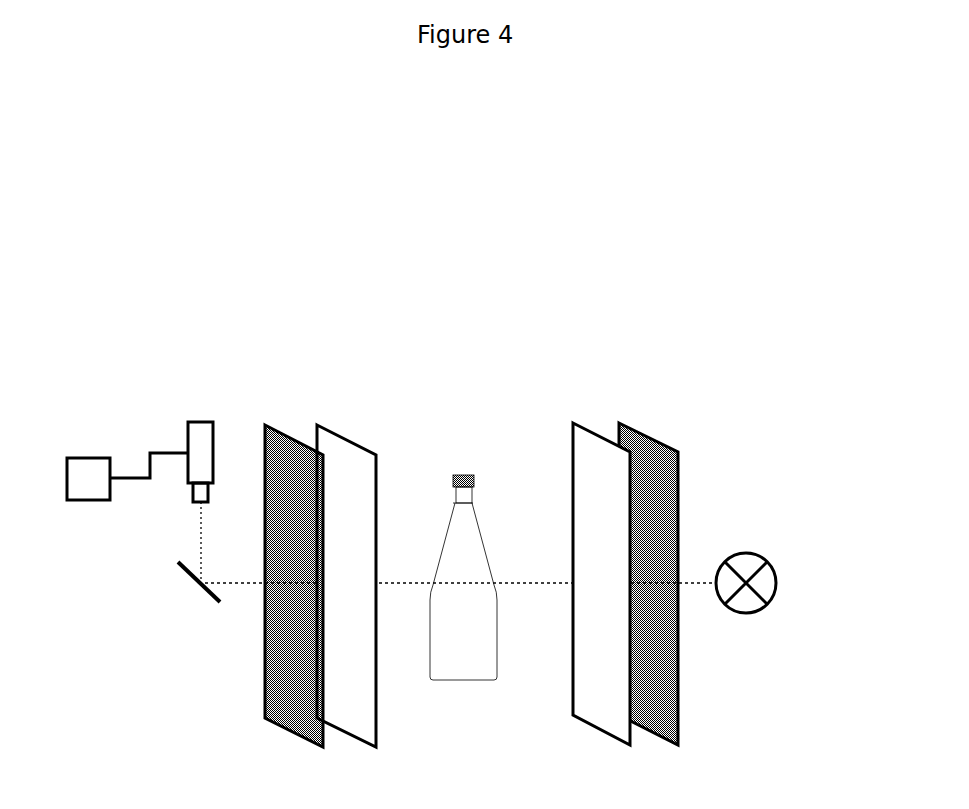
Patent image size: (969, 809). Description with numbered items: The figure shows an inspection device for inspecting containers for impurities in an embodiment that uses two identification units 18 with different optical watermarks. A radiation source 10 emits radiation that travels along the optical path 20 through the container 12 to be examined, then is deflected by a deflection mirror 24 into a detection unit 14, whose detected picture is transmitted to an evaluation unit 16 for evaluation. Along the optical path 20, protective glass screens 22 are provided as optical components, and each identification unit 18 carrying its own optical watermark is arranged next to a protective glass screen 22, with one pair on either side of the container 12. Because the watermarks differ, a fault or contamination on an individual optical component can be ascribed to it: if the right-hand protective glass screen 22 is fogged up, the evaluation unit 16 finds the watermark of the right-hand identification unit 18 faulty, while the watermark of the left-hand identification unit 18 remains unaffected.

The radiation source 10 is at (746, 553).
The container 12 is at (460, 475).
The detection unit 14 is at (203, 422).
The evaluation unit 16 is at (75, 458).
The identification unit 18 is at (300, 438).
The optical path 20 is at (503, 583).
The protective glass screen 22 is at (348, 432).
The deflection mirror 24 is at (208, 597).